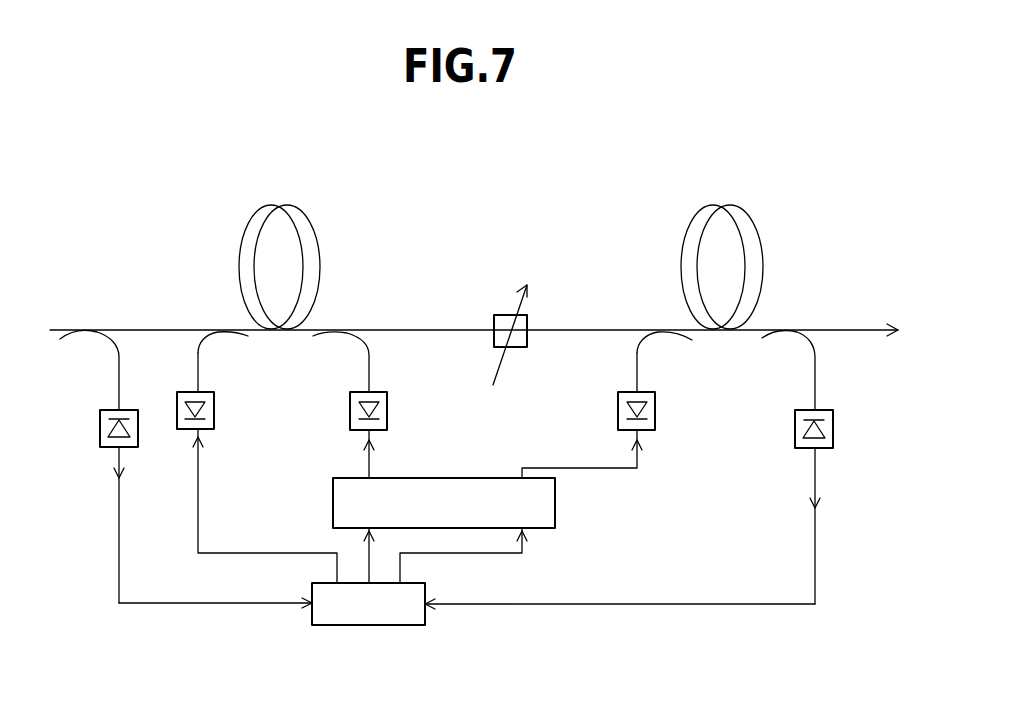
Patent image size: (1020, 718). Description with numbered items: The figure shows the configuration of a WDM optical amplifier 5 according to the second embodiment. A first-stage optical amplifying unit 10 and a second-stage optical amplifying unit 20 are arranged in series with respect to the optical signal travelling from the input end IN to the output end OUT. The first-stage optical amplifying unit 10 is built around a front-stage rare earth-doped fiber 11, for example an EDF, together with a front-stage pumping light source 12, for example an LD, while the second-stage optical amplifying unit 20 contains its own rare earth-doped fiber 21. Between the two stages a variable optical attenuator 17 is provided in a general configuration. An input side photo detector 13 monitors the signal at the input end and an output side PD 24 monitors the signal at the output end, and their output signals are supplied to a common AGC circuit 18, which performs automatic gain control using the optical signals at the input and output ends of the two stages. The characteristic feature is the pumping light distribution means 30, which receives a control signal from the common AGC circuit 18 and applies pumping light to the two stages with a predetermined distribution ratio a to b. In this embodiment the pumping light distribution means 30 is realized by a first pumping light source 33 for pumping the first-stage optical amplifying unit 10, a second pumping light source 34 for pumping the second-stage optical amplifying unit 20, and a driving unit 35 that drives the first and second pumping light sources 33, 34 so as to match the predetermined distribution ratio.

The WDM optical amplifier 5 is at (474, 177).
The first-stage optical amplifying unit 10 is at (215, 193).
The front-stage rare earth-doped fiber 11 is at (266, 262).
The front-stage pumping light source 12 is at (213, 410).
The input side photo detector 13 is at (99, 429).
The variable optical attenuator 17 is at (527, 330).
The common AGC circuit 18 is at (368, 626).
The second-stage optical amplifying unit 20 is at (780, 193).
The rear-stage rare earth-doped fiber 21 is at (710, 262).
The output side PD 24 is at (833, 427).
The pumping light distribution means 30 is at (685, 397).
The first pumping light source 33 is at (387, 404).
The second pumping light source 34 is at (618, 406).
The driving unit 35 is at (556, 503).